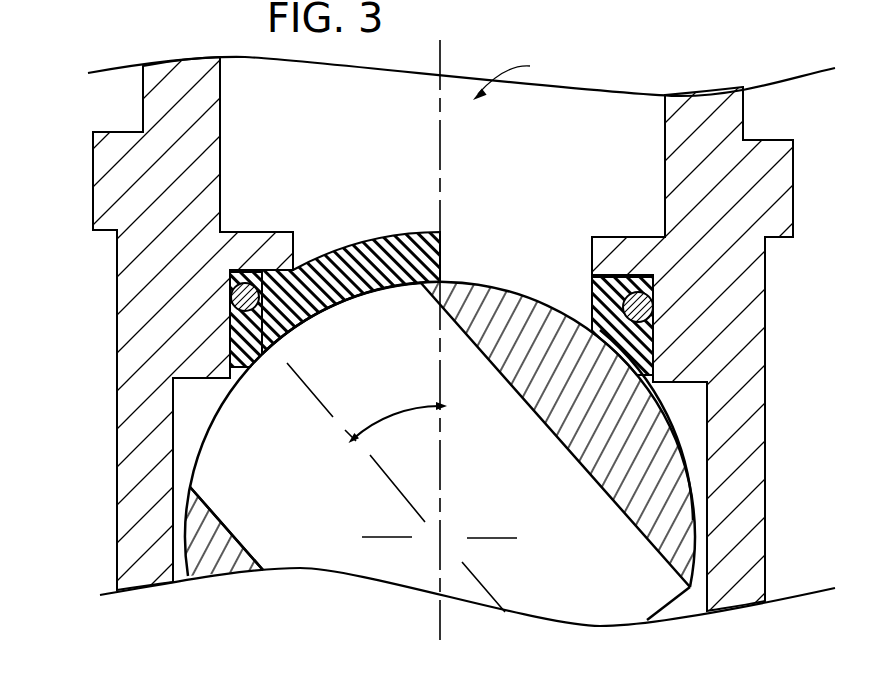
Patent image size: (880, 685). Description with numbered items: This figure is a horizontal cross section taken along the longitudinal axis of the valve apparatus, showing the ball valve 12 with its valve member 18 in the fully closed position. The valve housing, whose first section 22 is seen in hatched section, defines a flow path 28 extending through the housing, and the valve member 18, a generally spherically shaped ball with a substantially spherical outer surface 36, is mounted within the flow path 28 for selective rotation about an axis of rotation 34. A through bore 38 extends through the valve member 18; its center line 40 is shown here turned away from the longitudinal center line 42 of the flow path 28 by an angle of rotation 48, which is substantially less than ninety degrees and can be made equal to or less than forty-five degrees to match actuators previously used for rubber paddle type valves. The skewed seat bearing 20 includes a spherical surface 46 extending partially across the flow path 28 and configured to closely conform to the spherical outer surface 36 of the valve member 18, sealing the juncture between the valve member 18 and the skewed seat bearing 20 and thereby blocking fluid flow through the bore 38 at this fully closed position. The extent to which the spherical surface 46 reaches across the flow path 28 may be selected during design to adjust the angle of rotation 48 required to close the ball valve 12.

The ball valve 12 is at (123, 323).
The valve member 18 is at (670, 473).
The skewed seat bearing 20 is at (352, 254).
The first section 22 is at (152, 110).
The flow path 28 is at (521, 76).
The axis of rotation 34 is at (443, 534).
The spherical outer surface 36 is at (677, 433).
The through bore 38 is at (232, 533).
The center line of the bore 40 is at (372, 468).
The longitudinal center line 42 is at (442, 186).
The spherical surface 46 is at (327, 313).
The angle of rotation 48 is at (393, 408).